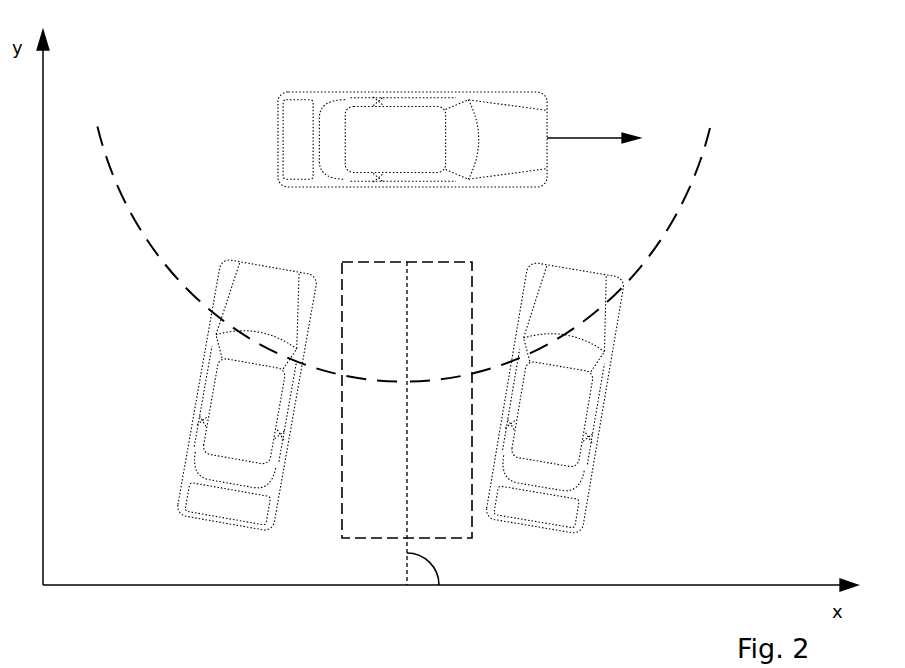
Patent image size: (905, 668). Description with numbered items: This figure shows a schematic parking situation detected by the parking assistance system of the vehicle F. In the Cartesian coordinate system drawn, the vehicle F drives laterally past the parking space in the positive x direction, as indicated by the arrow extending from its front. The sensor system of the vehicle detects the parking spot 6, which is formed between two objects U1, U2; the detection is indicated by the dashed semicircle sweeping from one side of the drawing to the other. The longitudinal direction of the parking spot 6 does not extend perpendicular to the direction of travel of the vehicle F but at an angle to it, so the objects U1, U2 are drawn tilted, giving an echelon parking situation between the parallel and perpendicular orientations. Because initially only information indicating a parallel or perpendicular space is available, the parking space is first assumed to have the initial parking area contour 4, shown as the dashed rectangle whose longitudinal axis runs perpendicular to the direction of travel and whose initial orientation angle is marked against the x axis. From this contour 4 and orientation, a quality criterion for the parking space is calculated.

The vehicle F is at (500, 90).
The object U1 is at (200, 410).
The object U2 is at (607, 407).
The initial parking area contour 4 is at (432, 262).
The parking spot 6 is at (323, 258).